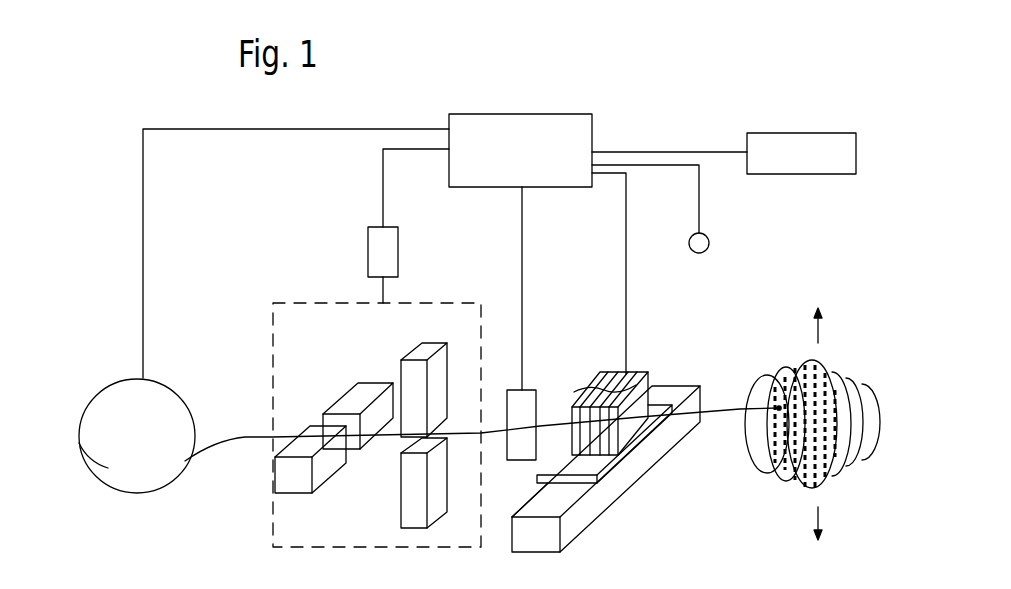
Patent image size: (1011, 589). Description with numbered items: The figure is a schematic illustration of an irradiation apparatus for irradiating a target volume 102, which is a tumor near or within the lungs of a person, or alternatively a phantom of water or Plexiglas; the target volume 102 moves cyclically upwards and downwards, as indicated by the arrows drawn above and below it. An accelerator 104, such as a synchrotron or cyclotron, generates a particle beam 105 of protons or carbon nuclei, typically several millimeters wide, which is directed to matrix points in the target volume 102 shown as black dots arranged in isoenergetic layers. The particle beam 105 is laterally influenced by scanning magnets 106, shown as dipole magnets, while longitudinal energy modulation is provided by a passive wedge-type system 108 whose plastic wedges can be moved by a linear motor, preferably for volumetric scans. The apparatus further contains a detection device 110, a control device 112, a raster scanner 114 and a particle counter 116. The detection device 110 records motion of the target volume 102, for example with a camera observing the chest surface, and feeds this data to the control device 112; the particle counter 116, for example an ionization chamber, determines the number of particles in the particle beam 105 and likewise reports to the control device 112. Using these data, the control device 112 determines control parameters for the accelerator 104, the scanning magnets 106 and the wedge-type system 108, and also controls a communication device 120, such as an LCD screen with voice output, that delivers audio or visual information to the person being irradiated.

The target volume 102 is at (877, 423).
The accelerator 104 is at (117, 405).
The particle beam 105 is at (247, 434).
The scanning magnets 106 is at (273, 300).
The wedge-type system 108 is at (643, 372).
The detection device 110 is at (795, 145).
The control device 112 is at (502, 132).
The raster scanner 114 is at (377, 239).
The particle counter 116 is at (527, 398).
The communication device 120 is at (709, 242).